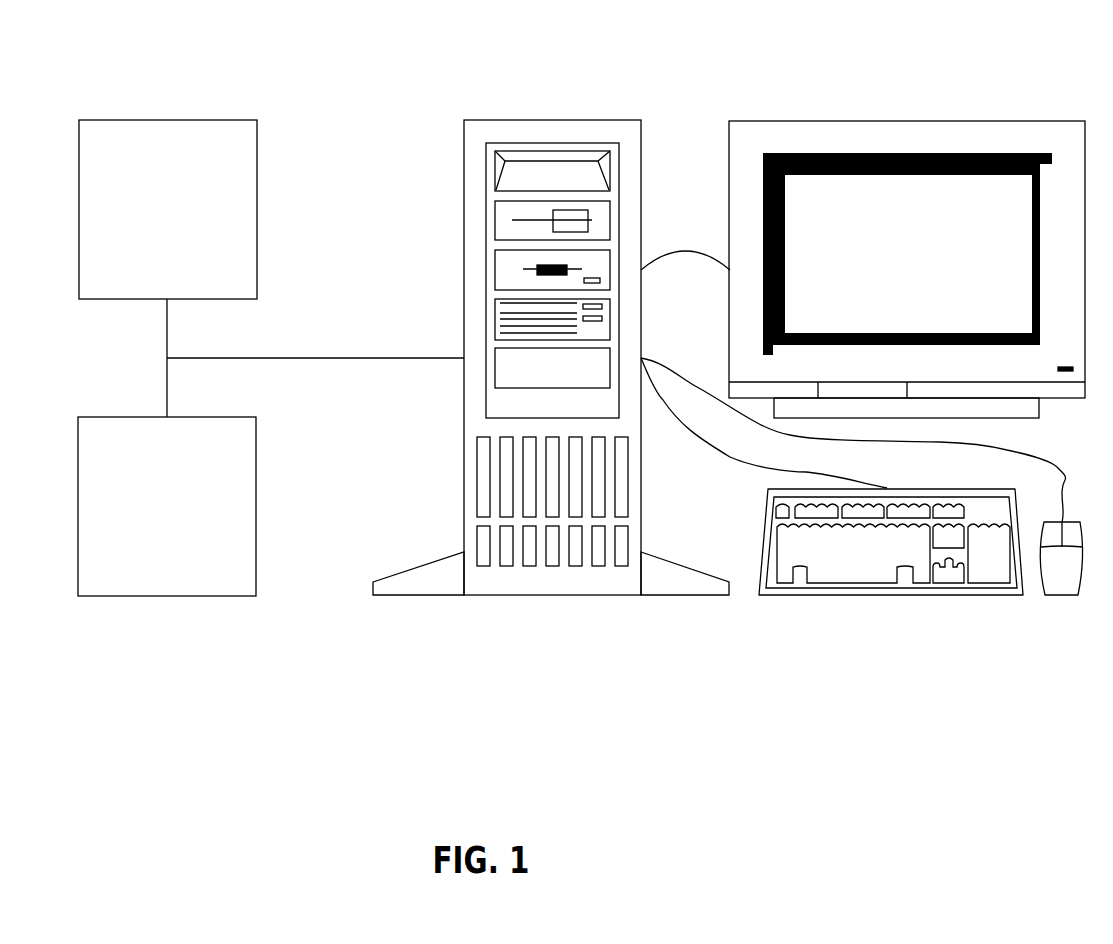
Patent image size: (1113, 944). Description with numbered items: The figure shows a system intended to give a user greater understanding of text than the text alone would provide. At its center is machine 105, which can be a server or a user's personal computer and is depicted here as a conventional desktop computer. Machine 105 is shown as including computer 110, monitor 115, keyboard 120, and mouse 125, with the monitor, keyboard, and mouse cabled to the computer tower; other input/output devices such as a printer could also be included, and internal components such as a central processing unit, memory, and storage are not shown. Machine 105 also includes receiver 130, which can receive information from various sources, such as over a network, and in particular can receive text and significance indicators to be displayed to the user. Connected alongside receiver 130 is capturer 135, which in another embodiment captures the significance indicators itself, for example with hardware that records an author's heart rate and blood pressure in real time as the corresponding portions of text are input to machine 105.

The machine 105 is at (302, 44).
The computer 110 is at (512, 120).
The monitor 115 is at (777, 120).
The keyboard 120 is at (805, 597).
The mouse 125 is at (1060, 597).
The receiver 130 is at (127, 120).
The capturer 135 is at (127, 417).